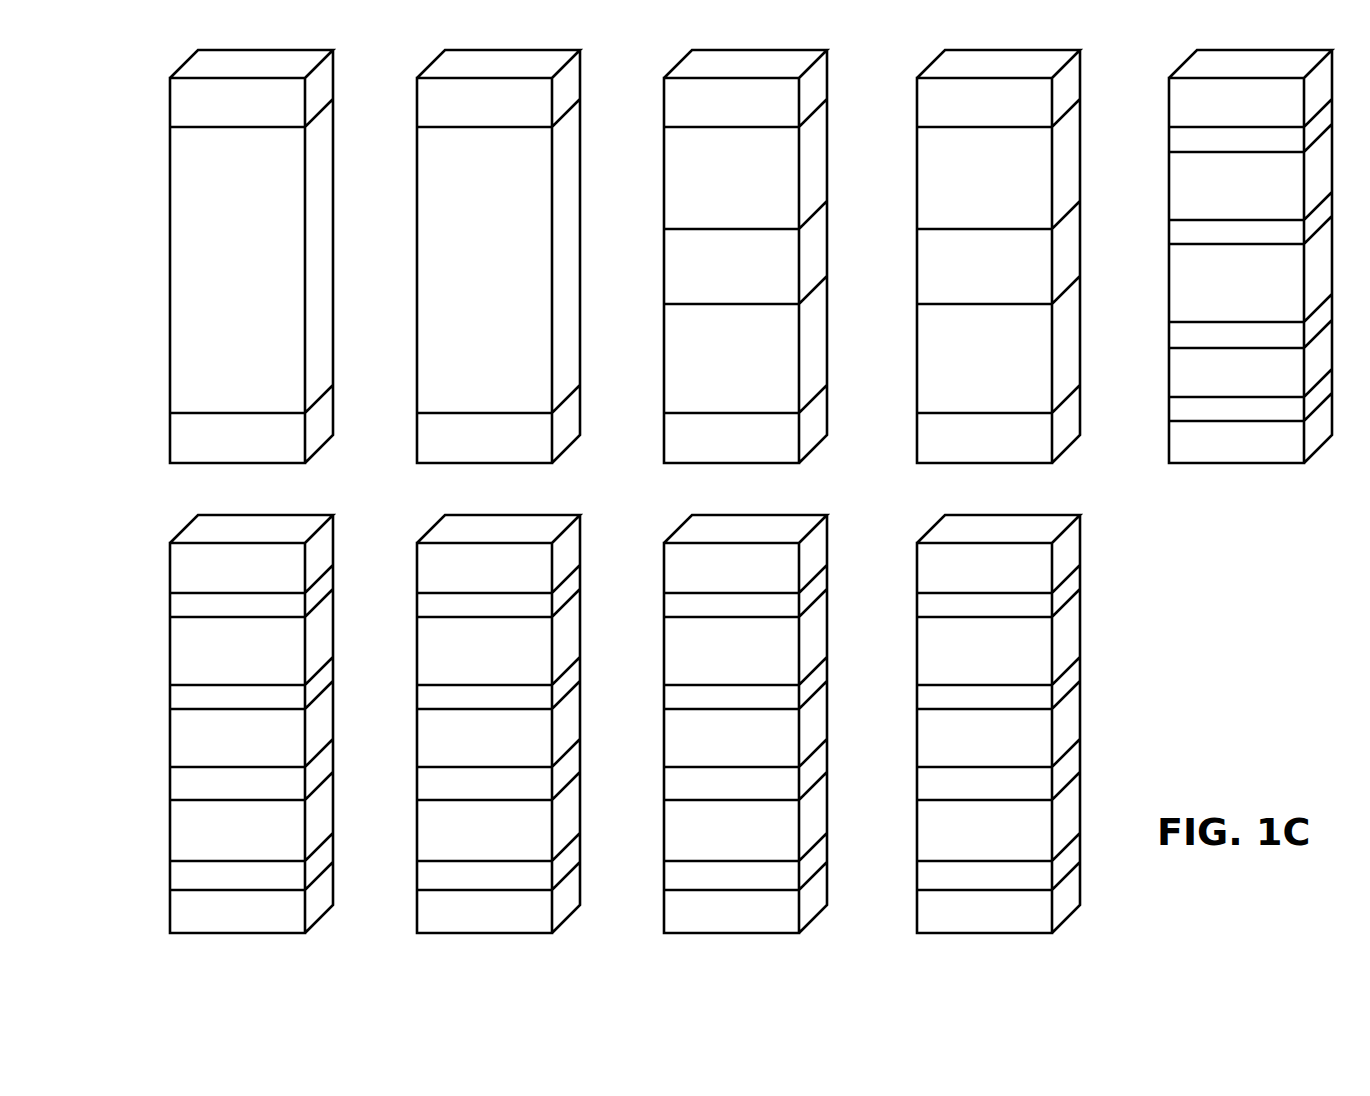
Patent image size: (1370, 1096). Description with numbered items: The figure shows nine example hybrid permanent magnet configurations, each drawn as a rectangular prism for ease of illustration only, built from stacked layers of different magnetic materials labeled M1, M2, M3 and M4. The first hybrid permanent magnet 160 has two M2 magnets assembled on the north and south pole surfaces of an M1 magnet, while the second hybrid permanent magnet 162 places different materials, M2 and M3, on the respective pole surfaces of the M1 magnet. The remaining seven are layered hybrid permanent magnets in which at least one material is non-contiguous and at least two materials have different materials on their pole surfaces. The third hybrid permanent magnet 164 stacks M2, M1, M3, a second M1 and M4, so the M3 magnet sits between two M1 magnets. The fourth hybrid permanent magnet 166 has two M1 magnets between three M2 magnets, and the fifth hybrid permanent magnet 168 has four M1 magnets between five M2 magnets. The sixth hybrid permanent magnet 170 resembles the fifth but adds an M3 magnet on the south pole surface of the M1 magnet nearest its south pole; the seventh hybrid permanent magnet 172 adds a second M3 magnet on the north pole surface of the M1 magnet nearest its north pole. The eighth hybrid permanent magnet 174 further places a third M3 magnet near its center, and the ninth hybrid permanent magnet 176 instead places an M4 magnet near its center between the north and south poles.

The first hybrid permanent magnet 160 is at (218, 34).
The second hybrid permanent magnet 162 is at (465, 34).
The third hybrid permanent magnet 164 is at (712, 34).
The fourth hybrid permanent magnet 166 is at (965, 34).
The fifth hybrid permanent magnet 168 is at (1217, 34).
The sixth hybrid permanent magnet 170 is at (218, 502).
The seventh hybrid permanent magnet 172 is at (465, 502).
The eighth hybrid permanent magnet 174 is at (712, 502).
The ninth hybrid permanent magnet 176 is at (965, 502).